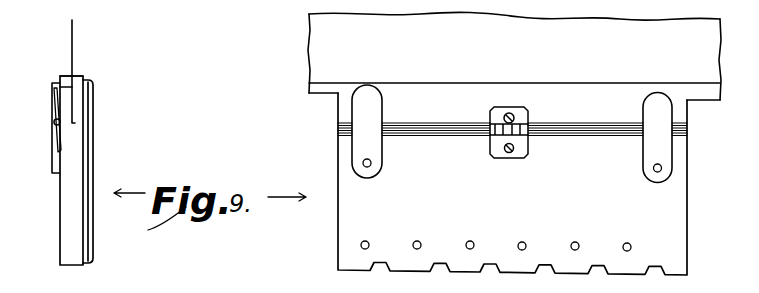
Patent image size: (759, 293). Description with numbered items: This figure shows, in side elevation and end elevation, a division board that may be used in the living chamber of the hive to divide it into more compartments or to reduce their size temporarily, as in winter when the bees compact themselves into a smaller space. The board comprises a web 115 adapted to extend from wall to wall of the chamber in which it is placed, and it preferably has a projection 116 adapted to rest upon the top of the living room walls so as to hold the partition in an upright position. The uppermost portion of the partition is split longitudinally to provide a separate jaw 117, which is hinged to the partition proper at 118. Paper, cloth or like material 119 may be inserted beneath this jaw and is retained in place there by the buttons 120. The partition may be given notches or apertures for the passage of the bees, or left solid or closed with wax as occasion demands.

The web 115 is at (70, 221).
The projection 116 is at (78, 78).
The jaw 117 is at (66, 91).
The hinge 118 is at (55, 124).
The paper, cloth or the like material 119 is at (74, 60).
The buttons 120 is at (53, 161).